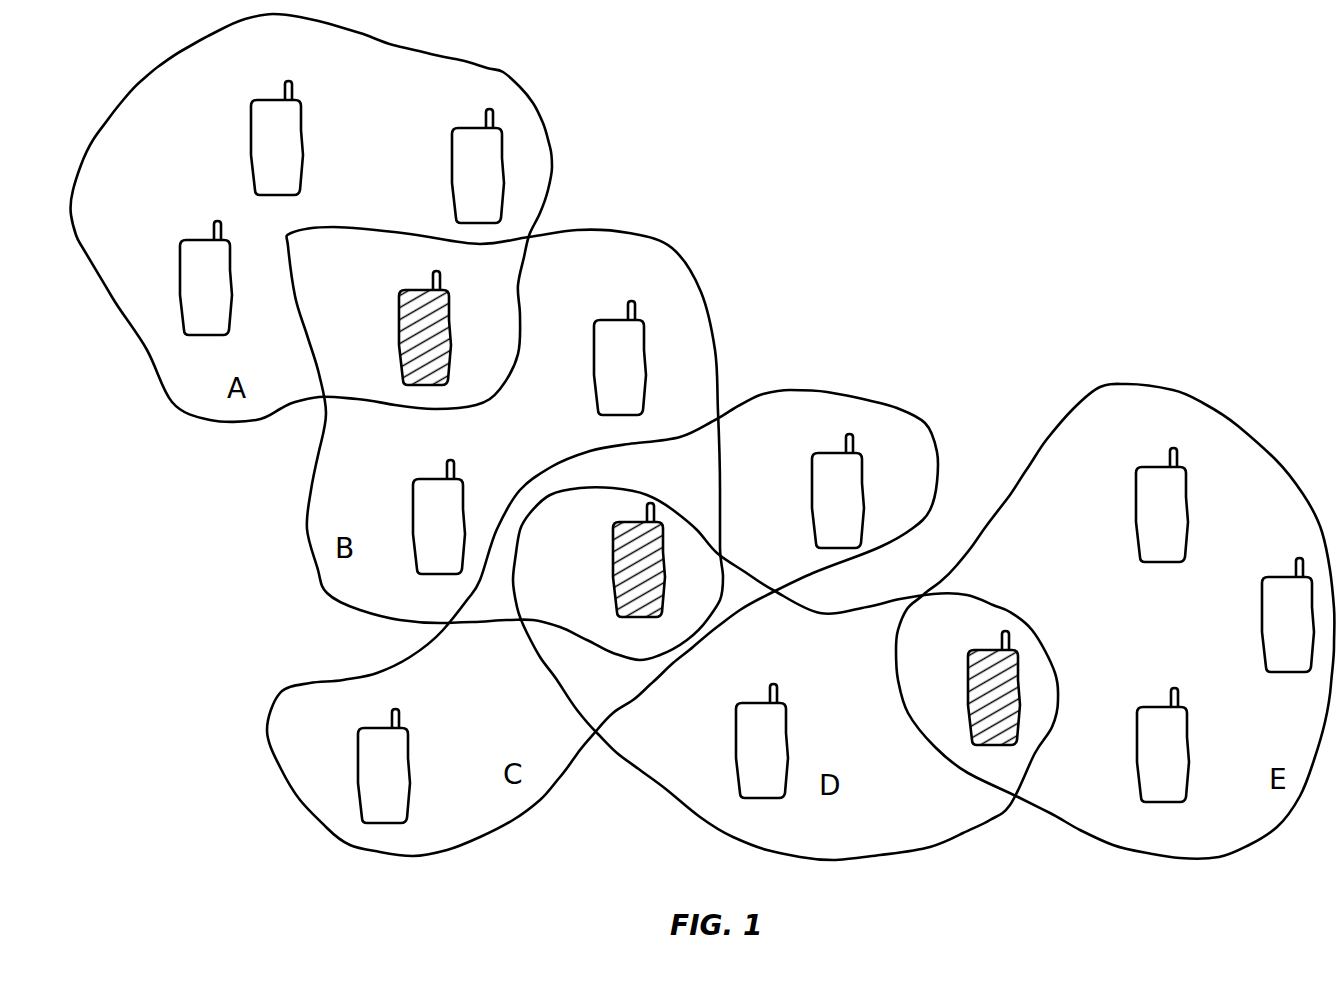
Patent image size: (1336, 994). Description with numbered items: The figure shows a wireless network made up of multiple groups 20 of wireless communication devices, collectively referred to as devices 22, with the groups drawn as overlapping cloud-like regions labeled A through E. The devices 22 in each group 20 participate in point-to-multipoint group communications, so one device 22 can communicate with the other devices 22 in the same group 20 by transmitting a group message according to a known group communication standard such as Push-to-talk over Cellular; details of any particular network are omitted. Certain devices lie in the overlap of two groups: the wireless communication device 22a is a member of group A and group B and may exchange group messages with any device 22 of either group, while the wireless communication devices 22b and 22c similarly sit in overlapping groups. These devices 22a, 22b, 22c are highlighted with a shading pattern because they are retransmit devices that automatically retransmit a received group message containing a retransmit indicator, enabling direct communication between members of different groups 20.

The group 20 is at (508, 70).
The wireless communication device 22 is at (262, 99).
The wireless communication device 22a is at (416, 289).
The wireless communication device 22b is at (613, 585).
The wireless communication device 22c is at (985, 650).